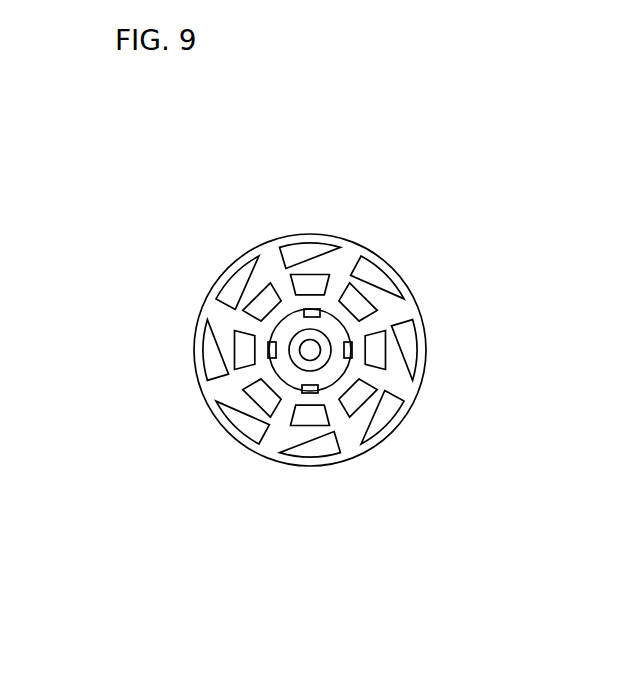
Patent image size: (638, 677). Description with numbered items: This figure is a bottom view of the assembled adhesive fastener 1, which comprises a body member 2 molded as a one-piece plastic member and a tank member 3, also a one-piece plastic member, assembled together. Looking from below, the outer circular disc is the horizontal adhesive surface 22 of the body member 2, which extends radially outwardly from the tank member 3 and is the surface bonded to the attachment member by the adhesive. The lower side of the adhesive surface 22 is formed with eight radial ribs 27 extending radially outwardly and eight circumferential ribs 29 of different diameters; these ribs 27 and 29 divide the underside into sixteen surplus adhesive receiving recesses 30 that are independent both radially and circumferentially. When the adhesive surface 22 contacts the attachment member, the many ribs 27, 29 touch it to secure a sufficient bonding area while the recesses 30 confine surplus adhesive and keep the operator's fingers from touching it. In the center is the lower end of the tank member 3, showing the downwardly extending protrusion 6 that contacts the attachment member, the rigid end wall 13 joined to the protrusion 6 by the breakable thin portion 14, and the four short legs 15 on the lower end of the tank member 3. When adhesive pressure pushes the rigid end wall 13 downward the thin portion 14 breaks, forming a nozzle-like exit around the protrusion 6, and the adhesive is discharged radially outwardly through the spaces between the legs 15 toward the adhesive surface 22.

The adhesive fastener 1 is at (148, 340).
The body member 2 is at (192, 371).
The tank member 3 is at (356, 328).
The protrusion 6 is at (312, 351).
The rigid end wall 13 is at (287, 377).
The thin portion 14 is at (310, 393).
The legs 15 is at (327, 317).
The adhesive surface 22 is at (321, 270).
The radial ribs 27 is at (270, 268).
The circumferential ribs 29 is at (200, 385).
The surplus adhesive receiving recesses 30 is at (350, 298).